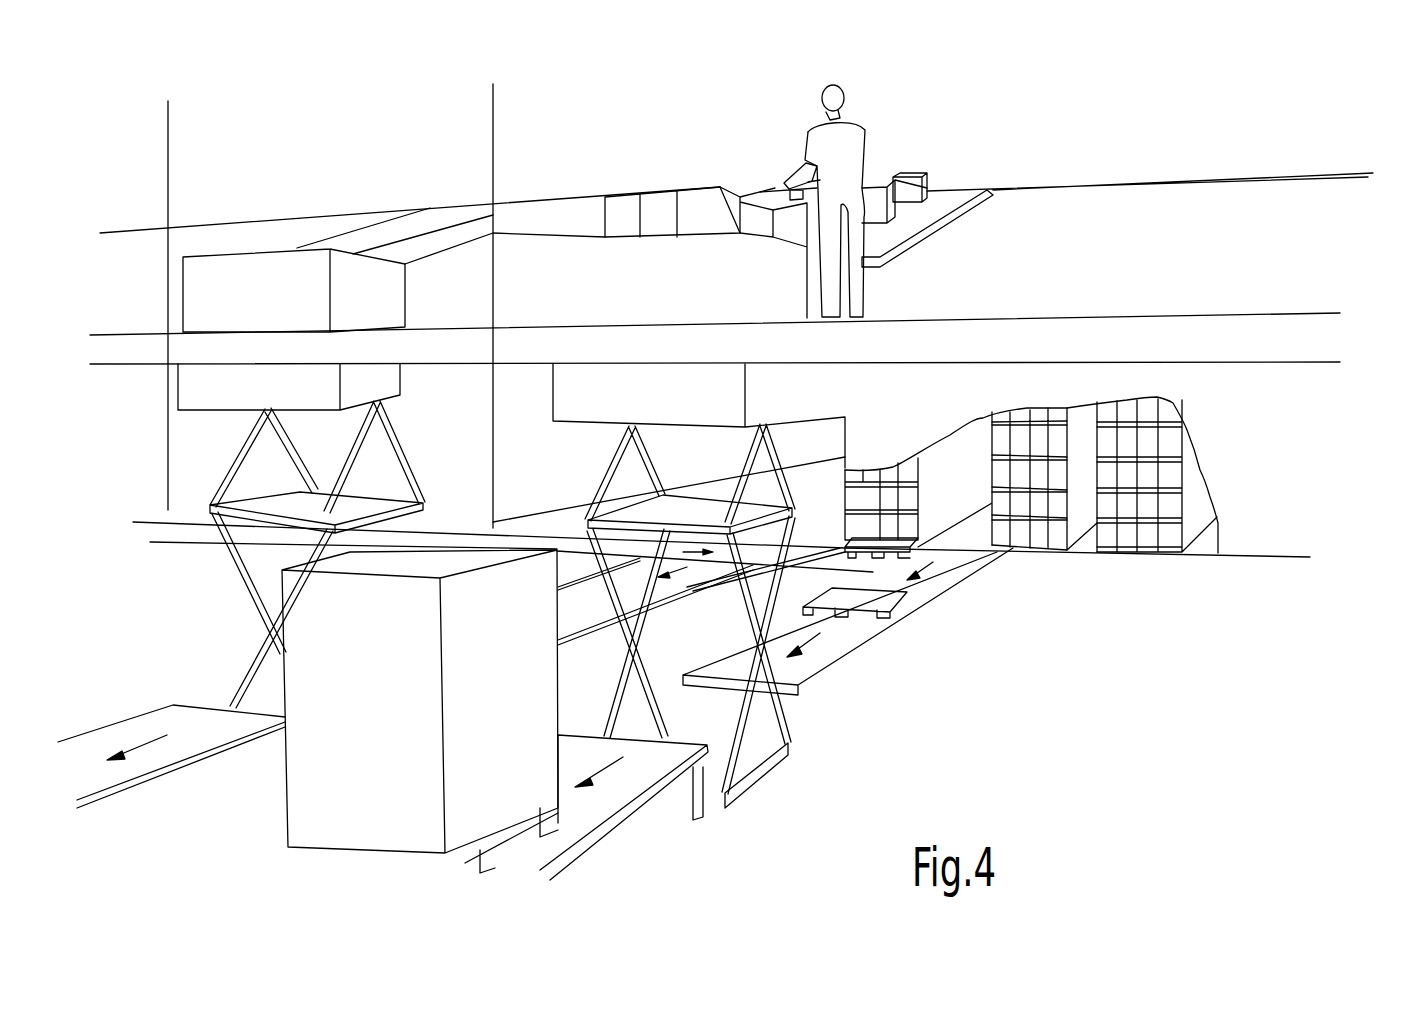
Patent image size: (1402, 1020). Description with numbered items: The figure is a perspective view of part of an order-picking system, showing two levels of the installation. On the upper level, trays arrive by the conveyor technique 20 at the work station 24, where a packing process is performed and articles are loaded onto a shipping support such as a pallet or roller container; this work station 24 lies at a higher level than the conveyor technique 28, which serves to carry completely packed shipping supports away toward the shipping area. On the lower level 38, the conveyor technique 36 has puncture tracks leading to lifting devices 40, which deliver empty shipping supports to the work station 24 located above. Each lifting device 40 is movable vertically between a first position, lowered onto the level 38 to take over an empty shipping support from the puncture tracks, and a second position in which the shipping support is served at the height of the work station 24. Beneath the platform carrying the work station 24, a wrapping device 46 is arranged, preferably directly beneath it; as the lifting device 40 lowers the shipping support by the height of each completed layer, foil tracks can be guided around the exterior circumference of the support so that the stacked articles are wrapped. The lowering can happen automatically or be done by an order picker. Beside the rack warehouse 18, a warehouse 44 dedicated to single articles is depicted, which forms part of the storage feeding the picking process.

The rack warehouse 18 is at (493, 152).
The conveyor technique 20 is at (1237, 178).
The work station 24 is at (757, 153).
The conveyor technique 28 is at (618, 820).
The conveyor technique 36 is at (887, 633).
The level 38 is at (1113, 791).
The lifting device 40 is at (790, 748).
The warehouse 44 is at (1102, 567).
The wrapping device 46 is at (567, 422).